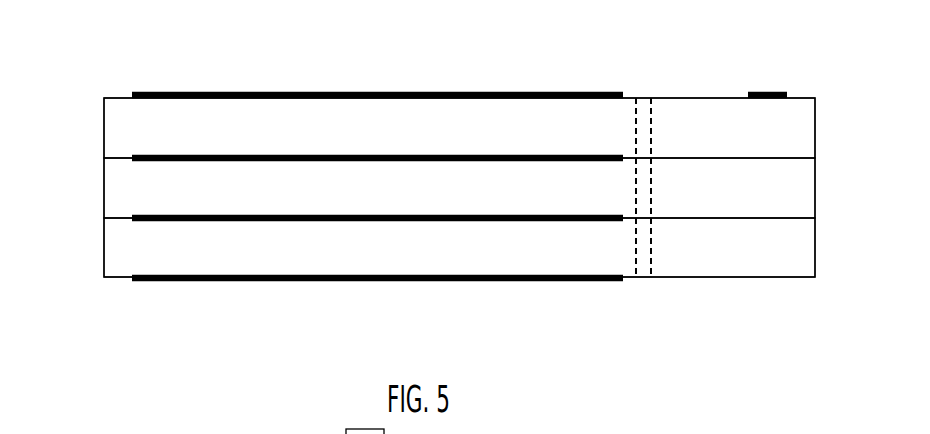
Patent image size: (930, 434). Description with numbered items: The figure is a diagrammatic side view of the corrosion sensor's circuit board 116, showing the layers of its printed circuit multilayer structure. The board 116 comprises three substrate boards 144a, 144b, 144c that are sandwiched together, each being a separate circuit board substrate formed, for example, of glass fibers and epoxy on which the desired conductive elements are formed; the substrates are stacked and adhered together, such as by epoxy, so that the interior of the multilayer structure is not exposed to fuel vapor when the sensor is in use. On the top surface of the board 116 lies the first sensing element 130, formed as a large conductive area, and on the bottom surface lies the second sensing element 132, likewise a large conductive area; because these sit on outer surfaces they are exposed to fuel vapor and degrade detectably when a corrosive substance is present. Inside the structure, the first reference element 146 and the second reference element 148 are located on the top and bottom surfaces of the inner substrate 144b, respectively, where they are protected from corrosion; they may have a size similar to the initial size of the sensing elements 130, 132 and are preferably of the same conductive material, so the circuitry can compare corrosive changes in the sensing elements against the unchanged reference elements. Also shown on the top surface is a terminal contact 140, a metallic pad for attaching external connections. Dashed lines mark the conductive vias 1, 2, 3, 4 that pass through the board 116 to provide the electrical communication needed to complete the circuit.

The conductive via 1 is at (644, 97).
The conductive via 2 is at (644, 97).
The conductive via 3 is at (644, 97).
The conductive via 4 is at (644, 97).
The board 116 is at (673, 277).
The first sensing element 130 is at (395, 91).
The second sensing element 132 is at (272, 282).
The terminal contacts 140 is at (770, 92).
The substrate board 144a is at (104, 125).
The substrate board 144b is at (104, 186).
The substrate board 144c is at (104, 249).
The first reference element 146 is at (213, 155).
The second reference element 148 is at (199, 222).